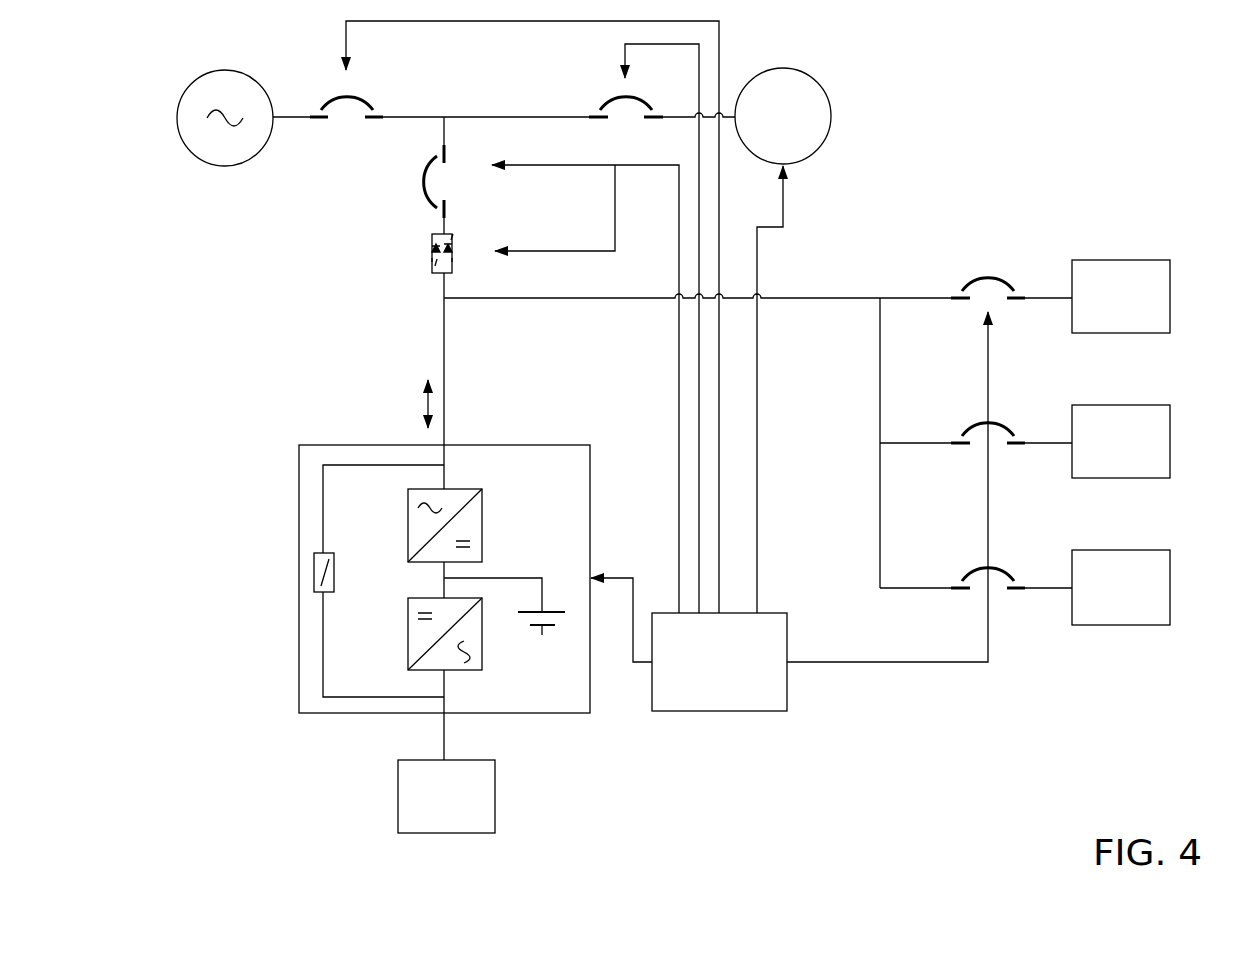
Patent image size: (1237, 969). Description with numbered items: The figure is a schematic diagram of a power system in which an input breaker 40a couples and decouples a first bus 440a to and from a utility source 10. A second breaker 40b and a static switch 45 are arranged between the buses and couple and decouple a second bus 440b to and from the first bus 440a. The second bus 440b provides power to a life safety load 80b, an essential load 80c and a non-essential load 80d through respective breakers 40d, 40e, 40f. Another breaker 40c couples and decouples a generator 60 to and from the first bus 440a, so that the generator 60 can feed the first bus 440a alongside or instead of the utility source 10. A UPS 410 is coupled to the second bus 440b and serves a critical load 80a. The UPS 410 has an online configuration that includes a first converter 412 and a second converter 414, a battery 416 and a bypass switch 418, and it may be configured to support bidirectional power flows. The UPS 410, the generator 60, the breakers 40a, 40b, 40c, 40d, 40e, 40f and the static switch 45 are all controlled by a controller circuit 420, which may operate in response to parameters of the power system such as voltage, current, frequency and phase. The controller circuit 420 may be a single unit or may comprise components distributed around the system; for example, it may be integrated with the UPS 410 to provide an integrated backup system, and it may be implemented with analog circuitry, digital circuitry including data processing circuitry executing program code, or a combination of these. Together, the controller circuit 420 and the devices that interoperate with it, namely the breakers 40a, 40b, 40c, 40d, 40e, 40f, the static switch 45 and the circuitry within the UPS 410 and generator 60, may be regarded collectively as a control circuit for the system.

The utility source 10 is at (227, 168).
The input breaker 40a is at (343, 87).
The second breaker 40b is at (392, 183).
The breaker 40c is at (598, 90).
The breaker 40d is at (955, 267).
The breaker 40e is at (960, 418).
The breaker 40f is at (965, 558).
The static switch 45 is at (400, 245).
The generator 60 is at (830, 115).
The critical load 80a is at (495, 797).
The life safety load 80b is at (1113, 259).
The essential load 80c is at (1120, 405).
The non-essential load 80d is at (1120, 550).
The UPS 410 is at (473, 440).
The first converter 412 is at (483, 523).
The second converter 414 is at (408, 635).
The battery 416 is at (523, 653).
The bypass switch 418 is at (336, 572).
The controller circuit 420 is at (718, 713).
The first bus 440a is at (498, 116).
The second bus 440b is at (543, 297).